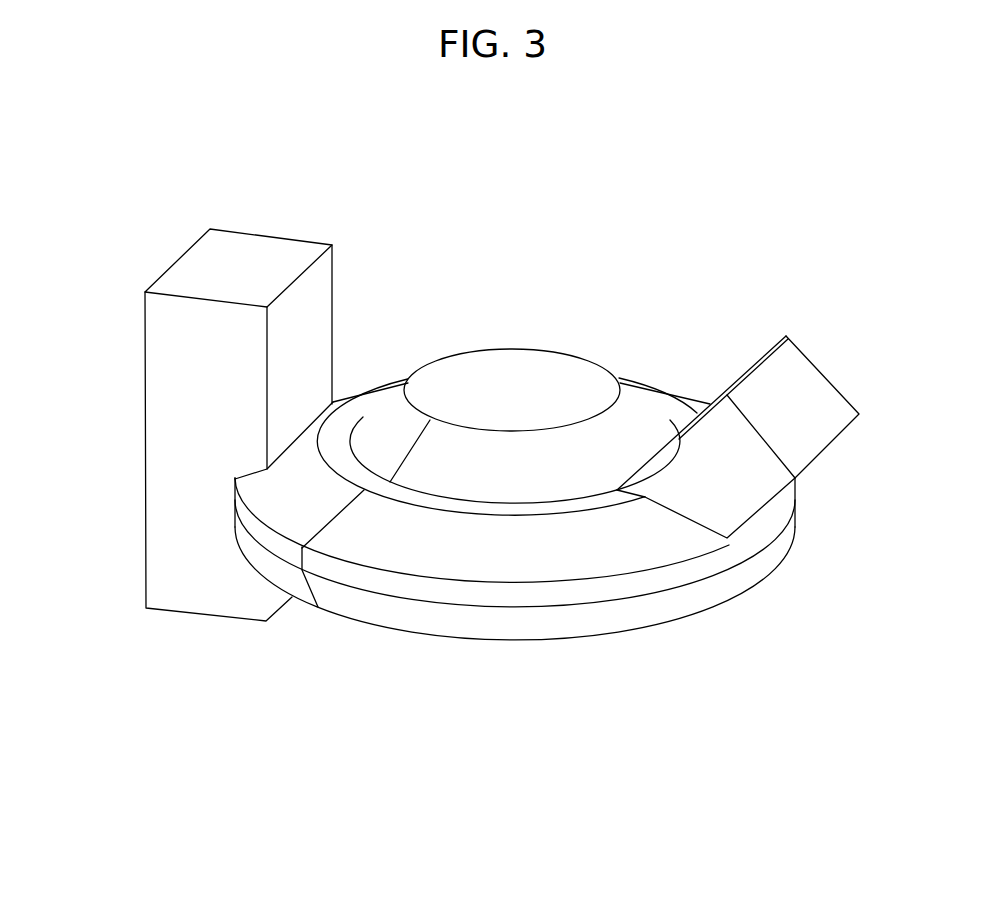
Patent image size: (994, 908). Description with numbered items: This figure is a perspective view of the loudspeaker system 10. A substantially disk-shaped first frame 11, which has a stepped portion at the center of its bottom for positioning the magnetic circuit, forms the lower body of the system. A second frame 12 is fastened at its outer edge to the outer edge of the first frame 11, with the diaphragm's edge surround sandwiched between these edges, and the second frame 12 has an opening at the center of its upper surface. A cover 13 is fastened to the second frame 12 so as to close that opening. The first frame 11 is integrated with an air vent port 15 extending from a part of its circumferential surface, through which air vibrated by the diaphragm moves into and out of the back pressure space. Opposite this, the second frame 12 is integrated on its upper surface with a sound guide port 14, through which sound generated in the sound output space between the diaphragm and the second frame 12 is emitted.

The loudspeaker system 10 is at (515, 514).
The first frame 11 is at (366, 607).
The second frame 12 is at (552, 562).
The cover 13 is at (537, 381).
The sound guide port 14 is at (807, 428).
The air vent port 15 is at (167, 392).